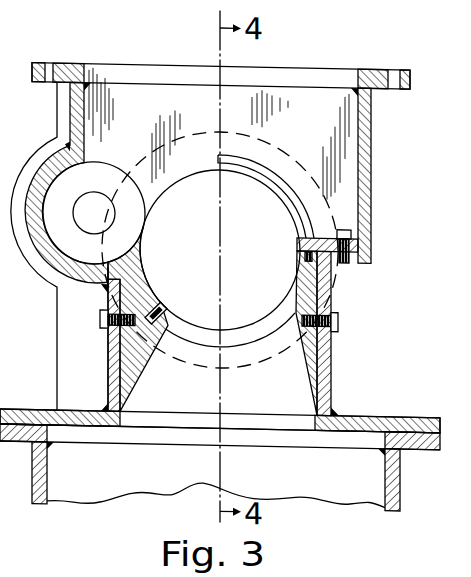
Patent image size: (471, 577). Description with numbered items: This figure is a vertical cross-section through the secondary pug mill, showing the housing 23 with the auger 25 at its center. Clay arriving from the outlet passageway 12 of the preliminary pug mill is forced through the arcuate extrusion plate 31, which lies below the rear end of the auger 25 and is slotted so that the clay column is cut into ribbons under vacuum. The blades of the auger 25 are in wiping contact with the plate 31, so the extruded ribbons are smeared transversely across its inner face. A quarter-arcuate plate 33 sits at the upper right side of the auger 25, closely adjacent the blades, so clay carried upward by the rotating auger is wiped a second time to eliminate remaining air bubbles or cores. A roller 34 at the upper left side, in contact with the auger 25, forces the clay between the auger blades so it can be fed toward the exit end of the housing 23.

The outlet passageway 12 is at (400, 484).
The housing 23 is at (333, 295).
The auger 25 is at (253, 248).
The arcuate extrusion plate 31 is at (197, 346).
The quarter-arcuate plate 33 is at (262, 162).
The roller 34 is at (96, 177).